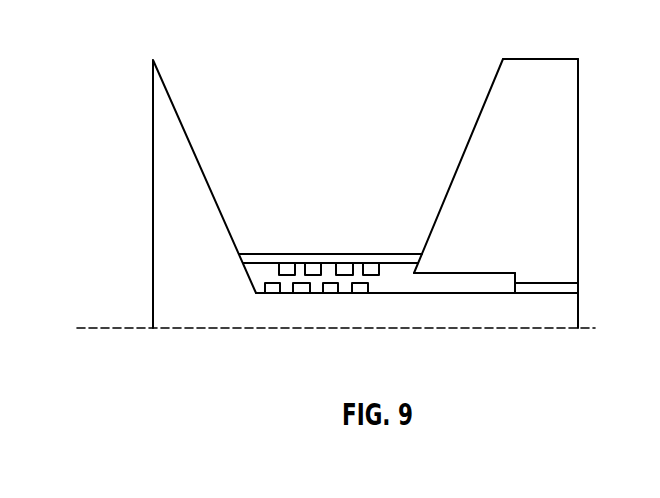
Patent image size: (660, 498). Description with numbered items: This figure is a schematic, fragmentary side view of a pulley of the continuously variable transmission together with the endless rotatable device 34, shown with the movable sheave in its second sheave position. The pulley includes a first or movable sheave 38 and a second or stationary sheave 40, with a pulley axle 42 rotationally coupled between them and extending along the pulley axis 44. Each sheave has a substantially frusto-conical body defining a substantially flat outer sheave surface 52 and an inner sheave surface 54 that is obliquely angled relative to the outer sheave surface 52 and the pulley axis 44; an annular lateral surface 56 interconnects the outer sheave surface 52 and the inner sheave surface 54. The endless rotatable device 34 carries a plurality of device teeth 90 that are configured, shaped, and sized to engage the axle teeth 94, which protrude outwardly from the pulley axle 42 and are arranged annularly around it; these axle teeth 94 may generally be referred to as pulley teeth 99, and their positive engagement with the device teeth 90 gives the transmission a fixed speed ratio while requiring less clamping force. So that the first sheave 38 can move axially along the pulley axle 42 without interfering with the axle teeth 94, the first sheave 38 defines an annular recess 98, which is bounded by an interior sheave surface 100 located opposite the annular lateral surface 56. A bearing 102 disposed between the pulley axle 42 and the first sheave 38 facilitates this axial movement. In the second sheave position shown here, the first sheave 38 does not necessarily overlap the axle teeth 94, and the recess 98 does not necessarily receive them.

The endless rotatable device 34 is at (397, 254).
The first sheave 38 is at (528, 158).
The second sheave 40 is at (153, 108).
The pulley axle 42 is at (578, 320).
The pulley axis 44 is at (101, 328).
The outer sheave surface 52 is at (578, 180).
The inner sheave surface 54 is at (481, 112).
The annular lateral surface 56 is at (531, 59).
The device teeth 90 is at (313, 269).
The axle teeth 94 is at (300, 288).
The recess 98 is at (513, 279).
The pulley teeth 99 is at (366, 288).
The interior sheave surface 100 is at (458, 273).
The bearing 102 is at (578, 288).